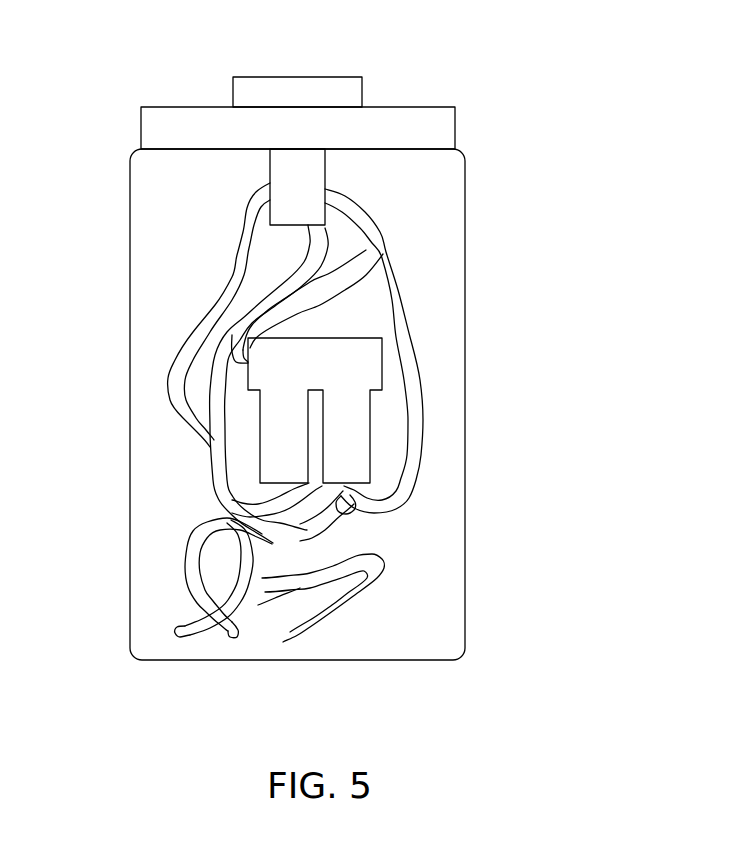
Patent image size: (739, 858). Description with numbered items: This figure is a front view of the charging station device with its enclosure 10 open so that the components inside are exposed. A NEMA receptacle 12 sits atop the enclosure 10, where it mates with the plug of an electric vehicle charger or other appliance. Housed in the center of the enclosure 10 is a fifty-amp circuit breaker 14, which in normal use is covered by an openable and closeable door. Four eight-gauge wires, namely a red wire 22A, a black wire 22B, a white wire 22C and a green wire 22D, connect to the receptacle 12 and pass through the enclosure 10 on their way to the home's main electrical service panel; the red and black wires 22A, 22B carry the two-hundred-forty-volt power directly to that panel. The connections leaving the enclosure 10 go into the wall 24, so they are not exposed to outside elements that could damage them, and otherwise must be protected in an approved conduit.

The enclosure device 10 is at (130, 595).
The NEMA 14-50 receptacle 12 is at (302, 77).
The circuit breaker 14 is at (332, 377).
The red wire 22A is at (419, 432).
The black wire 22B is at (312, 541).
The white wire 22C is at (310, 628).
The green wire 22D is at (216, 471).
The wall 24 is at (524, 48).